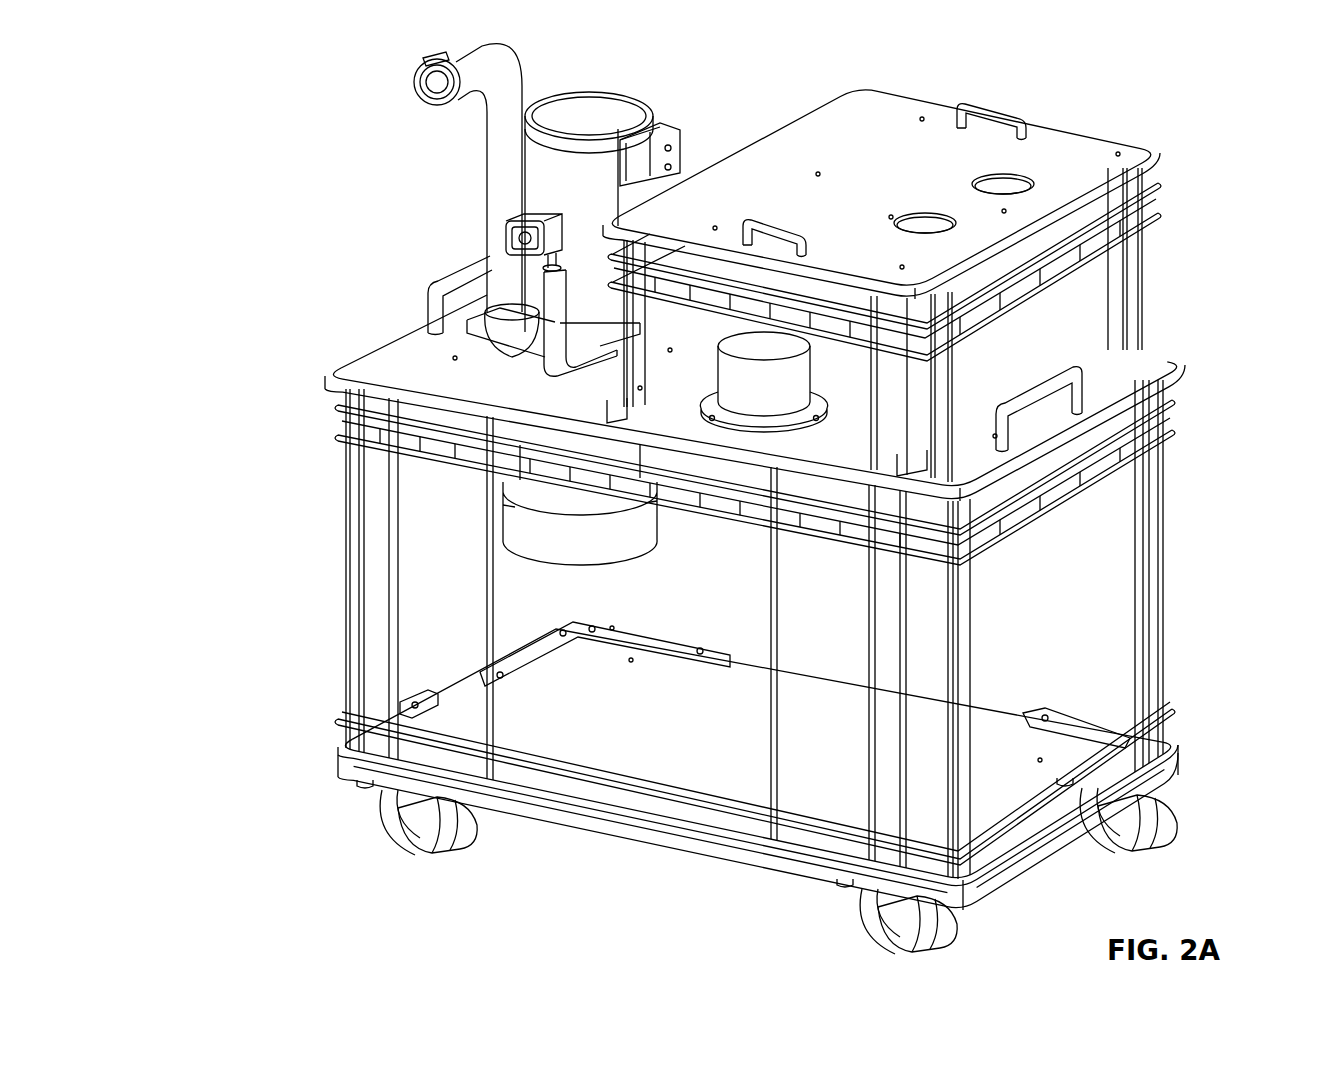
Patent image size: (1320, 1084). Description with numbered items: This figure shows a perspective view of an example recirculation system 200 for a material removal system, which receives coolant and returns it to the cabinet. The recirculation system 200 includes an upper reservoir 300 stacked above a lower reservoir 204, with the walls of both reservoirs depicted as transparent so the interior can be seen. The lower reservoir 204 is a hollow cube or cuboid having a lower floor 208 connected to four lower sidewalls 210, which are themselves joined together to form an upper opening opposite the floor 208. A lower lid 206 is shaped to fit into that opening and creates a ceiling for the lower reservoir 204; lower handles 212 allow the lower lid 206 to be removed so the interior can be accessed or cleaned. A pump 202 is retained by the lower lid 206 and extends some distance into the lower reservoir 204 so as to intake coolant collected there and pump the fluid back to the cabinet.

The recirculation system 200 is at (212, 90).
The pump 202 is at (664, 99).
The lower reservoir 204 is at (320, 627).
The lower lid 206 is at (372, 358).
The lower floor 208 is at (591, 834).
The lower sidewalls 210 is at (378, 634).
The lower handles 212 is at (436, 288).
The upper reservoir 300 is at (1188, 228).